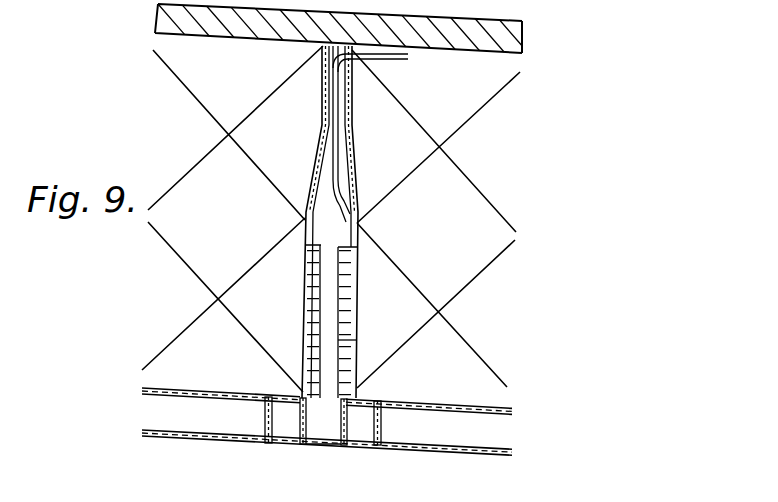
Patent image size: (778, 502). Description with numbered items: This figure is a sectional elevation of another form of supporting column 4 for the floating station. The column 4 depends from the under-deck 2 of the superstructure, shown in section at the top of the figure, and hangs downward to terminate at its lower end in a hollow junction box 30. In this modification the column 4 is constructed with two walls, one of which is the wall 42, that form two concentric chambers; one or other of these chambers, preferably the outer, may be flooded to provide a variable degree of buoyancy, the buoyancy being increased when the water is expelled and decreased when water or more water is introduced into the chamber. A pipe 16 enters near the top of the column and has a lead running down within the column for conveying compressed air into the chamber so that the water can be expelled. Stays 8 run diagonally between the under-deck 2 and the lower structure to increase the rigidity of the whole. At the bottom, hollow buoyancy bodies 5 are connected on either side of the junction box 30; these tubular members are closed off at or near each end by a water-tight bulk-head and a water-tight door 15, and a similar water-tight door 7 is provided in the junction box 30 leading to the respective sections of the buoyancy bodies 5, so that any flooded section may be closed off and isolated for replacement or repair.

The under-deck 2 is at (277, 22).
The stays 8 is at (468, 178).
The supporting column 4 is at (353, 285).
The wall 42 is at (338, 348).
The pipe 16 is at (397, 62).
The buoyancy body 5 is at (425, 467).
The water-tight door 15 is at (407, 432).
The water-tight door 7 is at (337, 420).
The junction box 30 is at (332, 445).